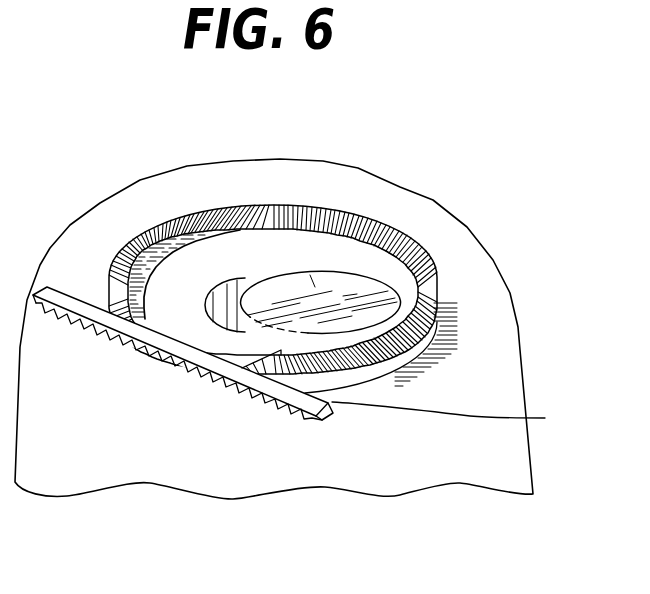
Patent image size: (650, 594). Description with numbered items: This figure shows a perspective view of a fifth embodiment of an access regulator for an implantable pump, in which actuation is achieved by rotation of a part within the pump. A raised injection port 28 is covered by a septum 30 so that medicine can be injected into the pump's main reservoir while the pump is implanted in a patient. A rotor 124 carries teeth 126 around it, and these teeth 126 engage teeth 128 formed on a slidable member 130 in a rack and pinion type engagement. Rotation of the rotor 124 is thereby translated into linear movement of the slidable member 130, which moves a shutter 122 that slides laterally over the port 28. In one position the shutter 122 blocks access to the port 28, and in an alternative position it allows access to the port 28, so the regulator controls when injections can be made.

The raised injection port 28 is at (518, 300).
The septum 30 is at (223, 300).
The shutter 122 is at (363, 290).
The rotor 124 is at (273, 252).
The teeth 126 is at (300, 215).
The teeth 128 is at (293, 419).
The slidable member 130 is at (462, 367).